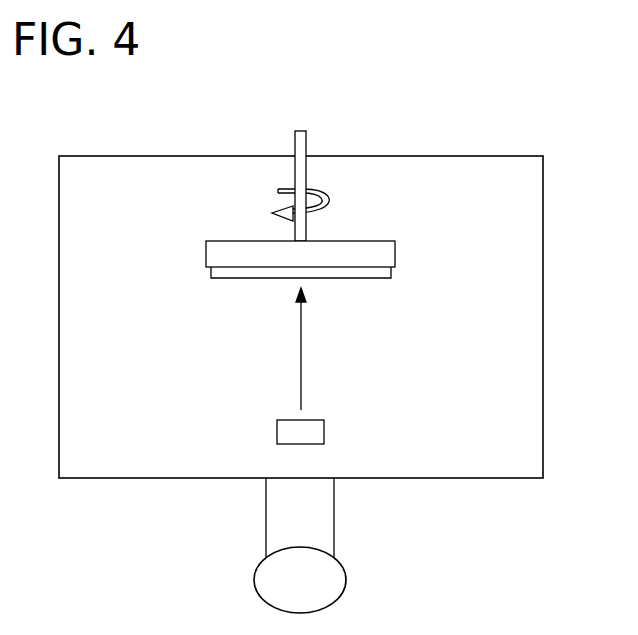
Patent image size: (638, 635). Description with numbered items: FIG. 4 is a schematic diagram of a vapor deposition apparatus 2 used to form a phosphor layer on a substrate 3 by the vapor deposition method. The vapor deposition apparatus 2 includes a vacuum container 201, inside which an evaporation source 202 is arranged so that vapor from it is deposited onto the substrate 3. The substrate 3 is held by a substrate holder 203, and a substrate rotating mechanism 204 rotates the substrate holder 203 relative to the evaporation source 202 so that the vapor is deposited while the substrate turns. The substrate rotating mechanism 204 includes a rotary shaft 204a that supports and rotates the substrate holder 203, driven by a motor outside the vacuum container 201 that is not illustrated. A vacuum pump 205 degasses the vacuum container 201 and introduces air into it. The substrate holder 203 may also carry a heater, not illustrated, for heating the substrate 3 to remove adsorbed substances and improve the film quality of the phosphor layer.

The vapor deposition apparatus 2 is at (366, 152).
The vacuum container 201 is at (543, 197).
The evaporation source 202 is at (324, 432).
The substrate holder 203 is at (395, 252).
The substrate rotating mechanism 204 is at (307, 173).
The rotary shaft 204a is at (295, 177).
The vacuum pump 205 is at (346, 578).
The substrate 3 is at (391, 278).